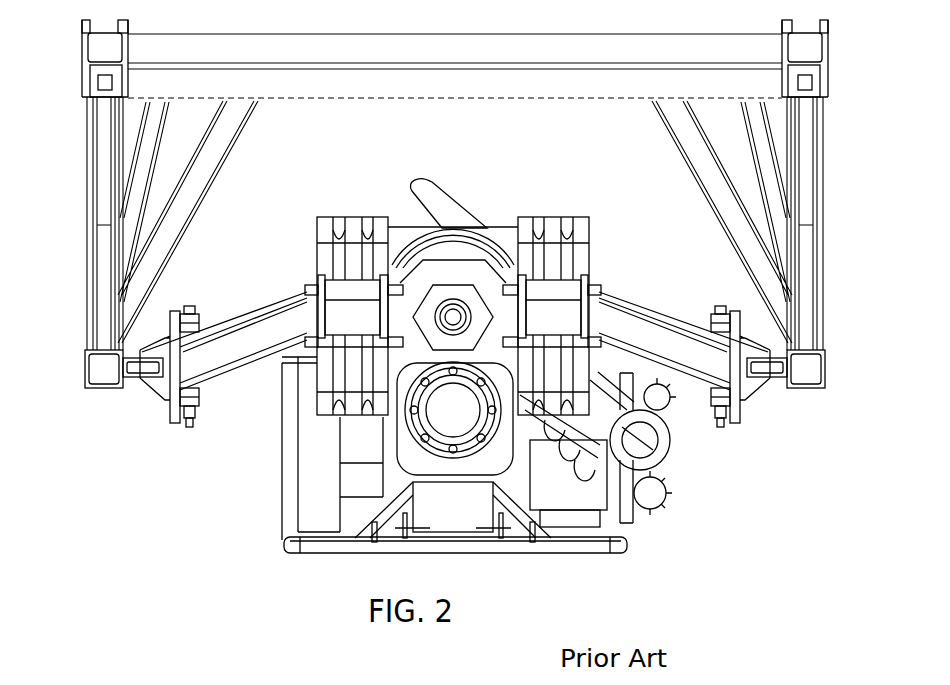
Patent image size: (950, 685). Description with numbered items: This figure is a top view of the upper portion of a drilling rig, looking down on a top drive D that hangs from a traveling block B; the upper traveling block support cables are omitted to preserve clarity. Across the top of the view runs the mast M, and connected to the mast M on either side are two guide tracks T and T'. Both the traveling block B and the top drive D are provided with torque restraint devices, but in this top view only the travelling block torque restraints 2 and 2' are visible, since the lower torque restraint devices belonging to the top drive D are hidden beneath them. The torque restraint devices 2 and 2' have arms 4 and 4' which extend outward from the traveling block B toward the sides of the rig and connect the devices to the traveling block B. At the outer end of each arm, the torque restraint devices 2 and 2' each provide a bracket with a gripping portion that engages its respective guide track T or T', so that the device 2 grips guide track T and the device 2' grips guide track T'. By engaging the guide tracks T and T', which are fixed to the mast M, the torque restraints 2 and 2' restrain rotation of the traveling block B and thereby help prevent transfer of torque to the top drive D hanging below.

The mast M is at (702, 82).
The traveling block B is at (350, 220).
The guide track T is at (93, 313).
The guide track T' is at (832, 324).
The torque restraint device 2 is at (108, 427).
The torque restraint device 2' is at (795, 428).
The arm 4 is at (224, 397).
The arm 4' is at (683, 423).
The top drive D is at (435, 510).